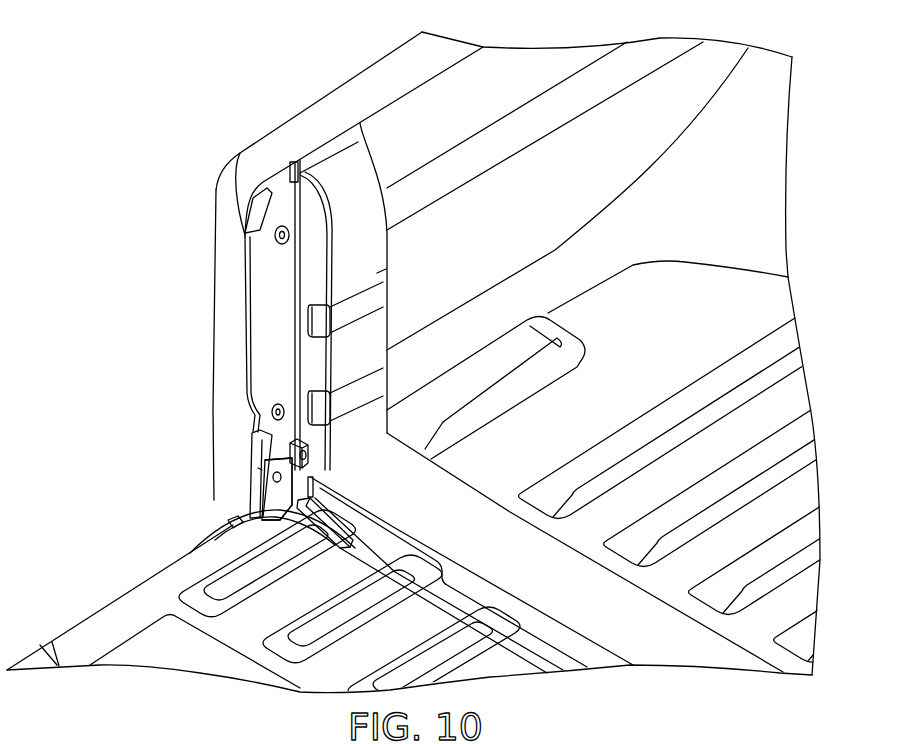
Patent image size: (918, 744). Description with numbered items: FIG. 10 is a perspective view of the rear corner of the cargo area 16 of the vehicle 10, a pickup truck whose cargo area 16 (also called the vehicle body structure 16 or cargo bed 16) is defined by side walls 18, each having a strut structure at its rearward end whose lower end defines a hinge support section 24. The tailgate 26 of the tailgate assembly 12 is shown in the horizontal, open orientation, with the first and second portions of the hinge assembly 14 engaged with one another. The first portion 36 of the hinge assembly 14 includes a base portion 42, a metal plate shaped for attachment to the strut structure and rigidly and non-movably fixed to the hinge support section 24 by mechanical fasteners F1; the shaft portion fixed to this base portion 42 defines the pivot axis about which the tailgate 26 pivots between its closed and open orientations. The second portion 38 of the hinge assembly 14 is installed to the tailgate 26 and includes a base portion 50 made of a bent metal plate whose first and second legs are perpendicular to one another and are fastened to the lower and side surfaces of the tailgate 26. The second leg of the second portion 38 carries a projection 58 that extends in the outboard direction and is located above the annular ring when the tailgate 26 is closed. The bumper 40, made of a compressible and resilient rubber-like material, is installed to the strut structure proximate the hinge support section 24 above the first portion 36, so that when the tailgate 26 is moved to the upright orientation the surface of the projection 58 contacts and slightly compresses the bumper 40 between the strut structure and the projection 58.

The vehicle 10 is at (194, 94).
The tailgate assembly 12 is at (166, 560).
The hinge assembly 14 is at (306, 468).
The cargo area 16 is at (490, 88).
The side wall 18 is at (323, 115).
The hinge support section 24 is at (213, 378).
The tailgate 26 is at (123, 617).
The first portion 36 is at (265, 482).
The second portion 38 is at (362, 506).
The bumper 40 is at (255, 437).
The base portion 42 is at (277, 489).
The base portion 50 is at (325, 482).
The projection 58 is at (232, 521).
The mechanical fasteners F1 is at (258, 468).